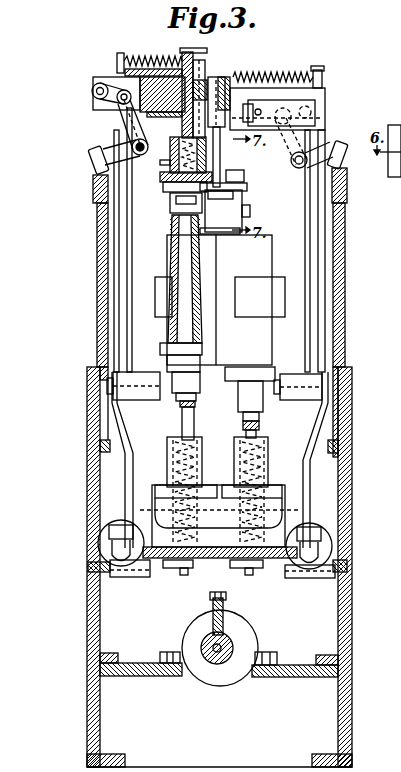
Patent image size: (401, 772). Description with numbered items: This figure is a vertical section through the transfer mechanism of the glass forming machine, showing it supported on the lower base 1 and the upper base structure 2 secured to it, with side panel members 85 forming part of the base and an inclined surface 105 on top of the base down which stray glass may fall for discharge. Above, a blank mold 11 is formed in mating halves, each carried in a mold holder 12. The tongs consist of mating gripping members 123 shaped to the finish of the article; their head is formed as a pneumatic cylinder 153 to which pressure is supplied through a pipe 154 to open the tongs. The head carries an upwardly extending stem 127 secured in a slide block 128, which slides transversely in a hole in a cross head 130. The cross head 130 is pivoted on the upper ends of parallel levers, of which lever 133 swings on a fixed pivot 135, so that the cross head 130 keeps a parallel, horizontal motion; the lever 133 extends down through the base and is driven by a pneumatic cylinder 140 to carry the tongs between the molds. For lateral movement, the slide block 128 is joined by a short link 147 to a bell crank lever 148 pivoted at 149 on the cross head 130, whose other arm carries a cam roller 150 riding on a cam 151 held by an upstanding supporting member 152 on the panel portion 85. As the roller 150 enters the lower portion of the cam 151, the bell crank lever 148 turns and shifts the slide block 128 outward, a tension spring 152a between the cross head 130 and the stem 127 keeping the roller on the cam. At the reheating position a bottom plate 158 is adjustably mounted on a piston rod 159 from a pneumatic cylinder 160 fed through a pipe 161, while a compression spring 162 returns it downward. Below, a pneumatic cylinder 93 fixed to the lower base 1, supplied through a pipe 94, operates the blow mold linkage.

The lower base 1 is at (352, 708).
The upper base structure 2 is at (352, 643).
The blank mold 11 is at (262, 250).
The mold holder 12 is at (163, 290).
The side panel members 85 is at (88, 525).
The pneumatic cylinder 93 is at (255, 633).
The pipe 94 is at (225, 601).
The inclined surface 105 is at (200, 578).
The gripping members 123 is at (175, 207).
The stem 127 is at (208, 50).
The slide block 128 is at (148, 60).
The cross head 130 is at (315, 95).
The lever 133 is at (113, 263).
The fixed pivot 135 is at (163, 377).
The pneumatic cylinder 140 is at (128, 578).
The link 147 is at (100, 84).
The bell crank lever 148 is at (115, 112).
The pivot 149 is at (110, 172).
The cam roller 150 is at (95, 150).
The cam 151 is at (98, 203).
The upstanding supporting member 152 is at (97, 318).
The tension spring 152a is at (182, 56).
The pneumatic cylinder 153 is at (237, 164).
The pipe 154 is at (164, 165).
The bottom plate 158 is at (248, 373).
The piston rod 159 is at (240, 424).
The pneumatic cylinder 160 is at (160, 483).
The pipe 161 is at (235, 568).
The compression spring 162 is at (233, 467).